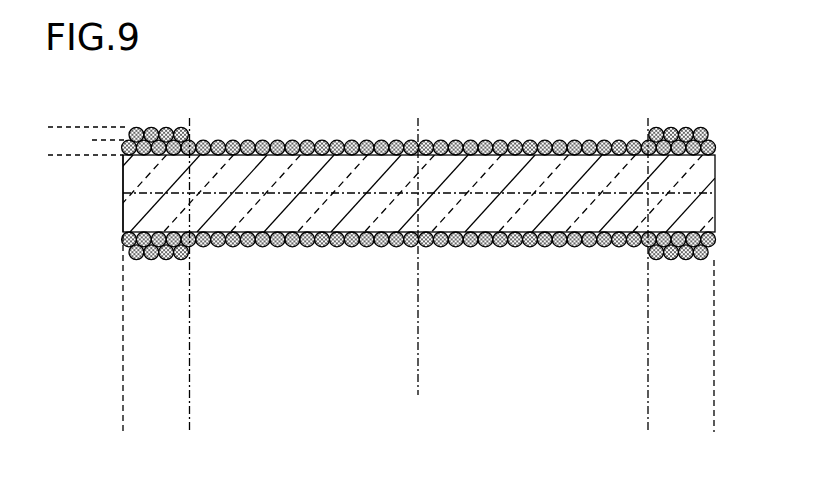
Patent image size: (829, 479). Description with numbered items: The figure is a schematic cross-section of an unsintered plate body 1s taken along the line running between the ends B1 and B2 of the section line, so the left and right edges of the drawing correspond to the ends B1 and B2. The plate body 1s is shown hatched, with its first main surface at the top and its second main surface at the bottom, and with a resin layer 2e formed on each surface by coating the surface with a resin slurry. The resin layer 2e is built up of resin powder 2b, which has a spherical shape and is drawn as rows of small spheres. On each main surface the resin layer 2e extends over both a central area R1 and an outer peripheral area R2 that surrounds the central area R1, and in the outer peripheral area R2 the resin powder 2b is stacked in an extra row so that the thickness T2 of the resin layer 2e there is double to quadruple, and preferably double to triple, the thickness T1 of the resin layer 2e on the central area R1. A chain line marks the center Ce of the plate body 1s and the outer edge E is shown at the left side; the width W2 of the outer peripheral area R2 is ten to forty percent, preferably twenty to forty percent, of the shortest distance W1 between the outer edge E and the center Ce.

The unsintered plate body 1s is at (729, 155).
The resin layer 2e is at (729, 127).
The resin powder 2b is at (668, 127).
The outer edge E is at (123, 212).
The center Ce is at (418, 238).
The thickness of the resin layer on the central area T1 is at (100, 178).
The thickness of the resin layer on the outer peripheral area T2 is at (57, 178).
The shortest distance between the outer edge and the center W1 is at (418, 390).
The width of the outer peripheral area W2 is at (190, 340).
The section line end B1 is at (81, 292).
The section line end B2 is at (753, 294).
The central area R1 is at (648, 428).
The outer peripheral area R2 is at (189, 428).